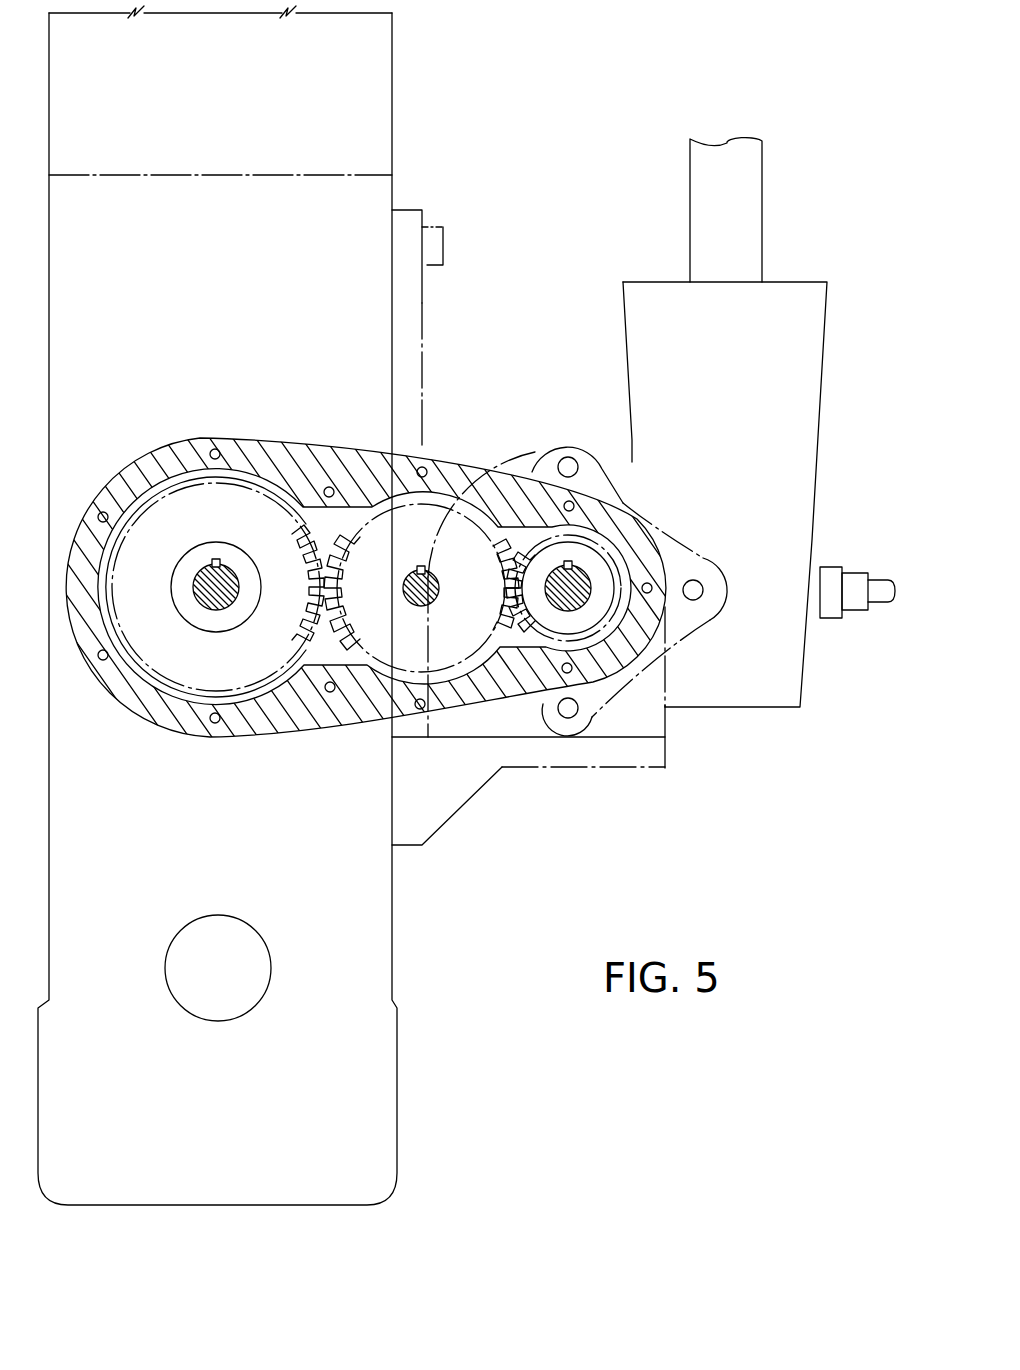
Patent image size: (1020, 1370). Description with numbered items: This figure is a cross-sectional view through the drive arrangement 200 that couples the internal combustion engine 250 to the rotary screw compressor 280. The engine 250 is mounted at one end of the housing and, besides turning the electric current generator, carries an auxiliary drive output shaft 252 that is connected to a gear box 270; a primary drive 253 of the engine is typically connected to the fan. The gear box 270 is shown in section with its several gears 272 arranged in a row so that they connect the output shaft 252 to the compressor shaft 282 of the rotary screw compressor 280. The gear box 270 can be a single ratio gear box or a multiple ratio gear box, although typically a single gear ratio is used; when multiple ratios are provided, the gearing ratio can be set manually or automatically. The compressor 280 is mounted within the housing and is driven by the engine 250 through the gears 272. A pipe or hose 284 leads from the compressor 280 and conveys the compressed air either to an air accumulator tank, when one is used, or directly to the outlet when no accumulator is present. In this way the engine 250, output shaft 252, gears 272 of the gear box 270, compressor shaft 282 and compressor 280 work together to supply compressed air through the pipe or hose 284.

The drive assembly 200 is at (421, 70).
The internal combustion engine 250 is at (290, 605).
The auxiliary drive output shaft 252 is at (226, 581).
The primary drive 253 is at (227, 935).
The gear box 270 is at (290, 440).
The gears 272 is at (435, 584).
The rotary screw compressor 280 is at (527, 455).
The compressor shaft 282 is at (588, 601).
The pipe or hose 284 is at (883, 577).